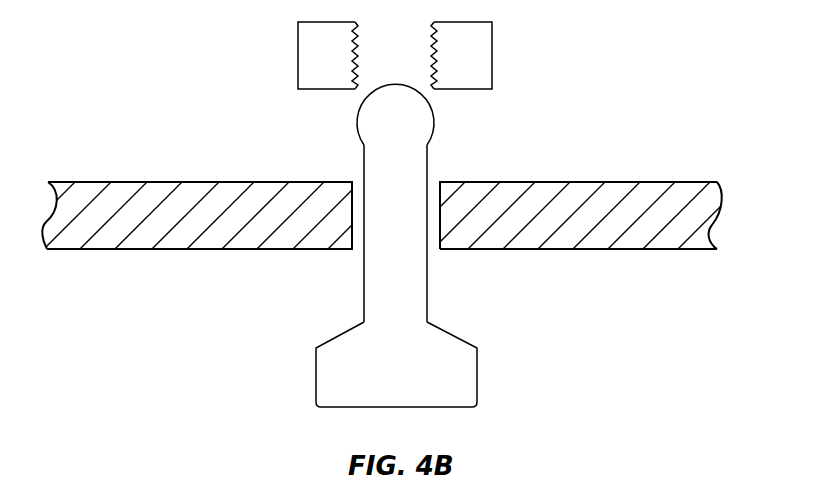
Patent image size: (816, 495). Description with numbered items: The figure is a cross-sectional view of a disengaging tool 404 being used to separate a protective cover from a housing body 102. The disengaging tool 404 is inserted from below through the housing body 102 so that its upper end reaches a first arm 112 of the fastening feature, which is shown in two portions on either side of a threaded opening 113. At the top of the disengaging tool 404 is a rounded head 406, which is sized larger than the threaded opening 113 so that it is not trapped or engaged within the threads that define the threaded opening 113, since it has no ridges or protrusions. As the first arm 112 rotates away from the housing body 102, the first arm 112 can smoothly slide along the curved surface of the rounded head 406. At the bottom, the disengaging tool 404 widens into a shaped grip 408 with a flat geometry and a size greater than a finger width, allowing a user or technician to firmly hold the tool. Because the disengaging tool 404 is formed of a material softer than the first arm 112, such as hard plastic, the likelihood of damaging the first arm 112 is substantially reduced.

The housing body 102 is at (118, 225).
The first arm 112 is at (344, 66).
The threaded opening 113 is at (414, 66).
The disengaging tool 404 is at (414, 313).
The rounded head 406 is at (440, 103).
The shaped grip 408 is at (480, 340).